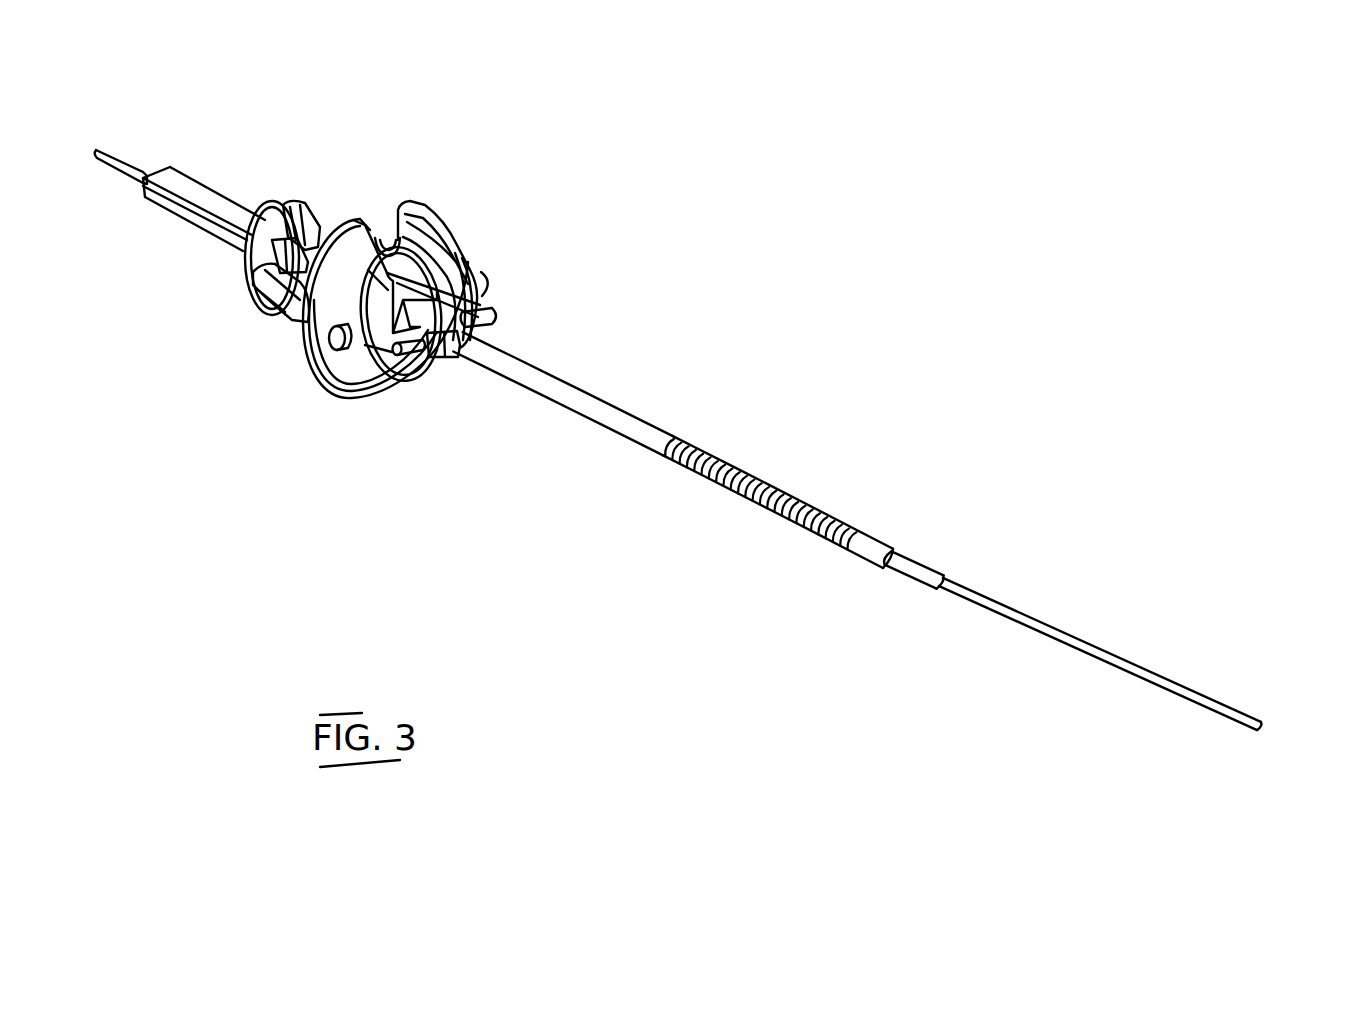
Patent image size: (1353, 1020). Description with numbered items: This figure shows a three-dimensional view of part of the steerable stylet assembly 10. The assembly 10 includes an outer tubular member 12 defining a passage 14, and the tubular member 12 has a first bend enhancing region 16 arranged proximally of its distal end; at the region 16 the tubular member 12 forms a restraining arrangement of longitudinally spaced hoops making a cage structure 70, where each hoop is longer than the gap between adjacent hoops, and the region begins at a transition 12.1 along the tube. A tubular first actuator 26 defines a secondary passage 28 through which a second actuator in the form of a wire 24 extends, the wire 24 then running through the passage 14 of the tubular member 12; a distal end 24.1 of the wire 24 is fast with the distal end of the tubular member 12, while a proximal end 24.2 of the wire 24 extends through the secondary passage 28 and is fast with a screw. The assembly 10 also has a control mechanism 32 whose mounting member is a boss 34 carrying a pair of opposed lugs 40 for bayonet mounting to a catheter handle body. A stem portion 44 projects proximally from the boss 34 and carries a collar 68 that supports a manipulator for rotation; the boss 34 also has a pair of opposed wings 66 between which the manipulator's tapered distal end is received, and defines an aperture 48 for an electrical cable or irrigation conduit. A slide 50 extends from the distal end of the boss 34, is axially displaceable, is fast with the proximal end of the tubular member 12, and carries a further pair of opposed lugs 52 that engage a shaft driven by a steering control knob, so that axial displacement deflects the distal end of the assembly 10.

The steerable stylet assembly 10 is at (855, 368).
The outer tubular member 12 is at (642, 420).
The proximal end of flexible section 12.1 is at (675, 463).
The passage 14 is at (890, 570).
The first bend enhancing region 16 is at (808, 500).
The second actuator 24 is at (1087, 645).
The distal end of the second actuator 24.1 is at (1262, 731).
The proximal end of the second actuator 24.2 is at (107, 154).
The first actuator 26 is at (933, 556).
The secondary passage 28 is at (940, 593).
The control mechanism 32 is at (502, 106).
The boss 34 is at (453, 225).
The lugs 40 is at (497, 280).
The stem portion 44 is at (221, 201).
The aperture 48 is at (387, 199).
The slide 50 is at (441, 360).
The lugs 52 is at (503, 312).
The wings 66 is at (282, 298).
The collar 68 is at (300, 213).
The cage structure 70 is at (829, 551).